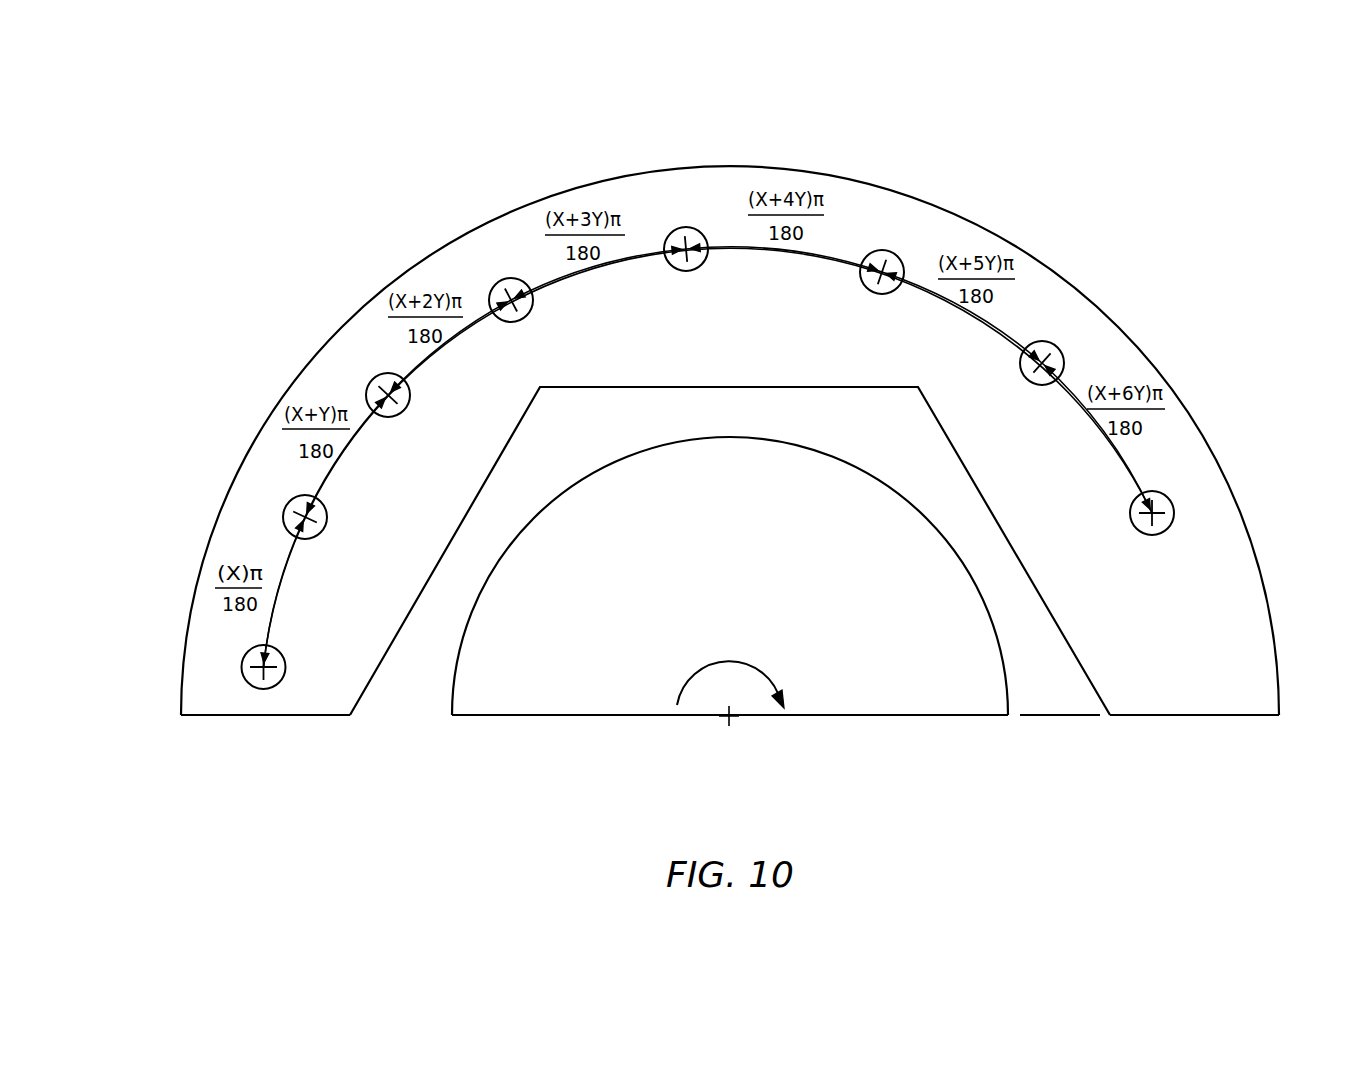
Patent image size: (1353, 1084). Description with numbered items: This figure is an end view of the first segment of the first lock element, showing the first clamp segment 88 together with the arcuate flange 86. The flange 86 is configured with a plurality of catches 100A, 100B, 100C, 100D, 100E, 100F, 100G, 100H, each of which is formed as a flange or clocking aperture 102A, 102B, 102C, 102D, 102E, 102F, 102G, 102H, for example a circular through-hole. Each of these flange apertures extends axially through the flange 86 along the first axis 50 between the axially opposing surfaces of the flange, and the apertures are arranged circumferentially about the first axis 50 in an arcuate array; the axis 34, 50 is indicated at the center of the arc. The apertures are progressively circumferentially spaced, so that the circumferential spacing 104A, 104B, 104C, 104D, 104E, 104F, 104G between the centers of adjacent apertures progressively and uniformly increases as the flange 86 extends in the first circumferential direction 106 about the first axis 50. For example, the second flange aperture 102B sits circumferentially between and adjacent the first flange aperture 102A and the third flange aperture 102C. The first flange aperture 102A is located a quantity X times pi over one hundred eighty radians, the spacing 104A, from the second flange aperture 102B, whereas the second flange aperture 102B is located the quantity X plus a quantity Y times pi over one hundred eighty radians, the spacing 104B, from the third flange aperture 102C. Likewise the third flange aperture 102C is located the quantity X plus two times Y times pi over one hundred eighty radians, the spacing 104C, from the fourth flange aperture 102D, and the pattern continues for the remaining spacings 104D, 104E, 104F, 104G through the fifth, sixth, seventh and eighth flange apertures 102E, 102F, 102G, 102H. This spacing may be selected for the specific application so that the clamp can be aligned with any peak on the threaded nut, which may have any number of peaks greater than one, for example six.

The flange 86 is at (1079, 291).
The first clamp segment 88 is at (1070, 716).
The catch 100A is at (227, 714).
The first flange aperture 102A is at (247, 683).
The catch 100B is at (195, 493).
The second flange aperture 102B is at (283, 514).
The catch 100C is at (320, 341).
The third flange aperture 102C is at (375, 376).
The catch 100D is at (457, 245).
The fourth flange aperture 102D is at (505, 279).
The catch 100E is at (660, 190).
The fifth flange aperture 102E is at (684, 227).
The catch 100F is at (927, 217).
The sixth flange aperture 102F is at (886, 251).
The catch 100G is at (1147, 344).
The seventh flange aperture 102G is at (1064, 364).
The catch 100H is at (1232, 463).
The eighth flange aperture 102H is at (1170, 500).
The circumferential spacing 104A is at (278, 603).
The circumferential spacing 104B is at (345, 450).
The circumferential spacing 104C is at (463, 338).
The circumferential spacing 104D is at (623, 262).
The circumferential spacing 104E is at (760, 251).
The circumferential spacing 104F is at (975, 326).
The circumferential spacing 104G is at (1118, 458).
The first circumferential direction 106 is at (729, 663).
The axis of rotation 34 is at (751, 754).
The first axis 50 is at (735, 722).